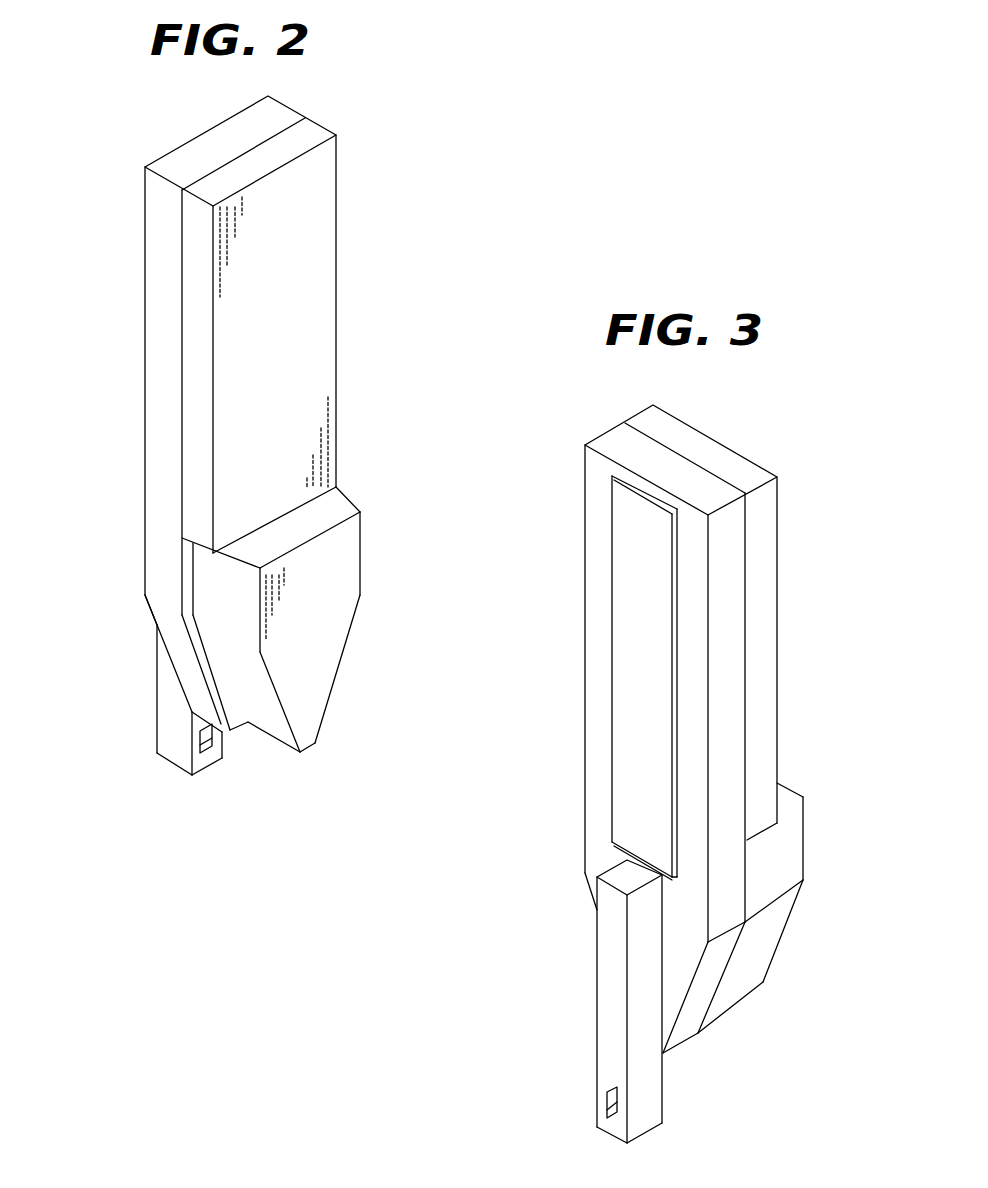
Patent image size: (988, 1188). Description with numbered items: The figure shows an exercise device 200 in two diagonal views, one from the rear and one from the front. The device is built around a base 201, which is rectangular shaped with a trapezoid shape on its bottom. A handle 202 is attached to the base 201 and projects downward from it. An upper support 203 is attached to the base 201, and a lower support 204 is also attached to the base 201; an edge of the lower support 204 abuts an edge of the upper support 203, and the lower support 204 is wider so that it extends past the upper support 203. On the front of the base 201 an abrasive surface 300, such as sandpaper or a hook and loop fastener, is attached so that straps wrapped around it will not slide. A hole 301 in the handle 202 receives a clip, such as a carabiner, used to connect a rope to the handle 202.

In FIG. 2, the connector terminal 200 is at (251, 828).
In FIG. 2, the base 201 is at (207, 146).
In FIG. 3, the base 201 is at (613, 443).
In FIG. 2, the handle 202 is at (170, 733).
In FIG. 3, the handle 202 is at (647, 1105).
In FIG. 2, the upper support 203 is at (310, 265).
In FIG. 3, the upper support 203 is at (763, 538).
In FIG. 2, the lower support 204 is at (335, 558).
In FIG. 3, the lower support 204 is at (790, 837).
In FIG. 3, the abrasive surface 300 is at (633, 628).
In FIG. 3, the hole 301 is at (603, 1100).